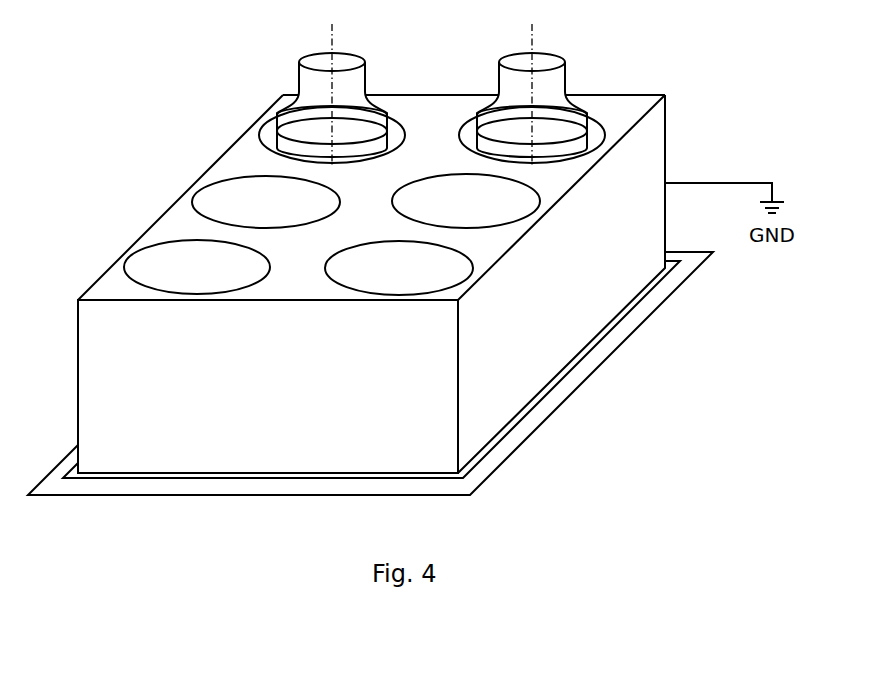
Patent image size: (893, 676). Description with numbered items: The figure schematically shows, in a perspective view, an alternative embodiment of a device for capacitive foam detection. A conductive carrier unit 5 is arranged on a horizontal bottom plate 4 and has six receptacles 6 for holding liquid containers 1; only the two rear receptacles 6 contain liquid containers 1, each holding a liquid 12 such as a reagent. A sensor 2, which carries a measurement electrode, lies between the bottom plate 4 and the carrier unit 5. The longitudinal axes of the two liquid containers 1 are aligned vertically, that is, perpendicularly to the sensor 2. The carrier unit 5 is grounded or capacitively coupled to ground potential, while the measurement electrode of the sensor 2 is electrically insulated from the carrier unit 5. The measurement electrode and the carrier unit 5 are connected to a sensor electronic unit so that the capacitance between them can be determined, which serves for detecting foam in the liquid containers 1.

The liquid container 1 is at (368, 78).
The sensor 2 is at (580, 368).
The bottom plate 4 is at (543, 427).
The carrier unit 5 is at (573, 293).
The receptacle 6 is at (268, 133).
The liquid 12 is at (312, 128).